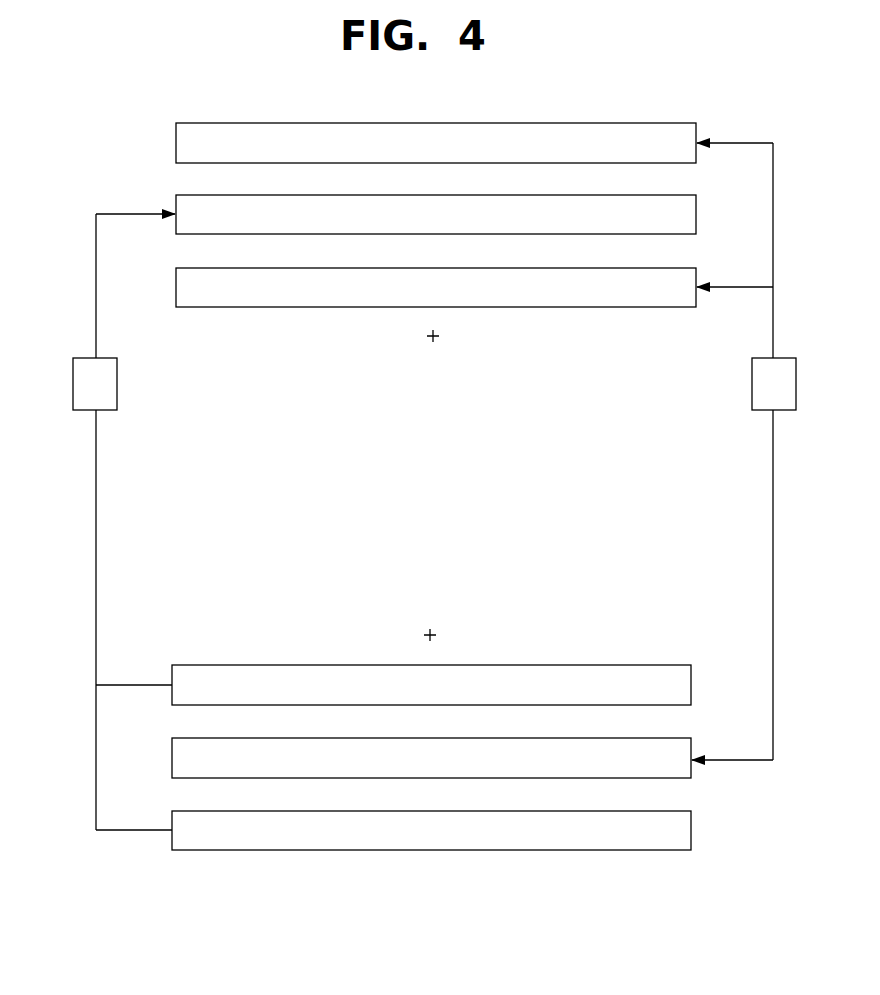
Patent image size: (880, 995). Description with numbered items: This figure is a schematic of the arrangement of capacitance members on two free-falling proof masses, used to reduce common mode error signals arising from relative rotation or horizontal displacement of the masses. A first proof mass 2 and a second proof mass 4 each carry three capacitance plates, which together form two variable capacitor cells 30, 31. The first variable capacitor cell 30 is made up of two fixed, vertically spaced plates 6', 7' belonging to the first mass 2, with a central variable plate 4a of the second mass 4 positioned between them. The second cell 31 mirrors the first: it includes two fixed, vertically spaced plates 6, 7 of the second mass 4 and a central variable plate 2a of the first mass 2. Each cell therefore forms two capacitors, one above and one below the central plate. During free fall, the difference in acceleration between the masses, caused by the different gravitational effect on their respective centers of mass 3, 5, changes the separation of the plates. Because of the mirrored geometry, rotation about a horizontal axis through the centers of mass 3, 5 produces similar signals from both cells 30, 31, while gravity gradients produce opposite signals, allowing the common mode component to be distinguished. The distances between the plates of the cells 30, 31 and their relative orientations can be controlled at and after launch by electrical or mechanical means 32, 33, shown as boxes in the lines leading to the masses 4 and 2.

The first variable capacitor cell 30 is at (70, 107).
The second variable capacitor cell 31 is at (65, 650).
The fixed vertically spaced plate 6' is at (436, 101).
The fixed vertically spaced plate 7' is at (436, 322).
The central variable plate 4a is at (199, 195).
The fixed vertically spaced plate 6 is at (431, 642).
The fixed vertically spaced plate 7 is at (431, 864).
The central variable plate 2a is at (634, 737).
The second proof mass 4 is at (97, 515).
The first proof mass 2 is at (773, 525).
The electrical or mechanical means 32 is at (117, 382).
The electrical or mechanical means 33 is at (752, 388).
The center of mass 3 is at (438, 338).
The center of mass 5 is at (436, 632).